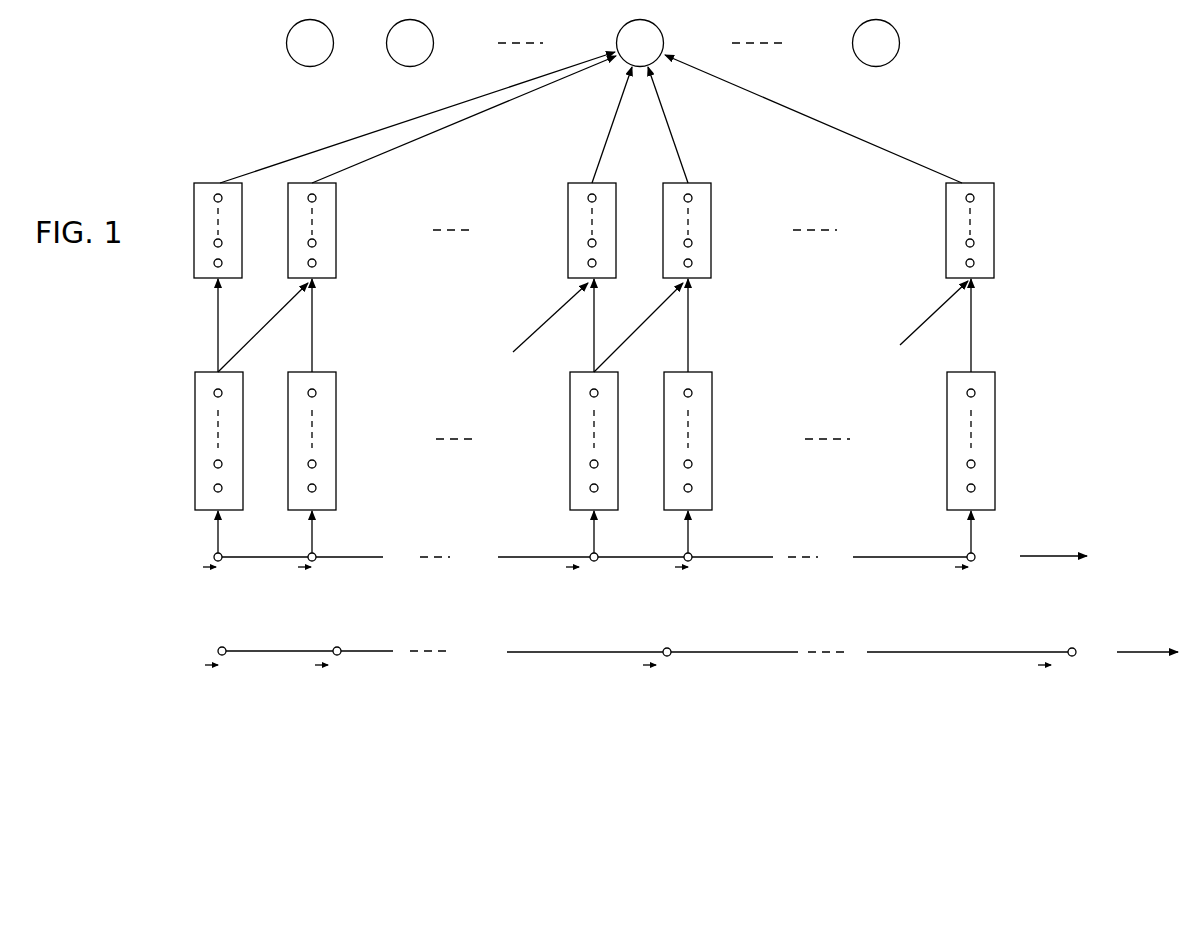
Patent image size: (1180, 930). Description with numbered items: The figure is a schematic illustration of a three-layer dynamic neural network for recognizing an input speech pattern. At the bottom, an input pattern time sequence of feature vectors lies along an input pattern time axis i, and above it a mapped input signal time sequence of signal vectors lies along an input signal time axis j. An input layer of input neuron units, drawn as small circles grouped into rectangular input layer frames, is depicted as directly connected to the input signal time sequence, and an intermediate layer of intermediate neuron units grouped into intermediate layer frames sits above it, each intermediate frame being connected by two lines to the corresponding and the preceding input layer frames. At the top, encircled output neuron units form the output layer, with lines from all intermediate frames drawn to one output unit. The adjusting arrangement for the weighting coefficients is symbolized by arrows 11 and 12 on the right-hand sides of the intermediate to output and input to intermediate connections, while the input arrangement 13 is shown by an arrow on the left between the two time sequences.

The adjusting arrangement arrow 11 is at (1000, 112).
The adjusting arrangement arrow 12 is at (1000, 323).
The input arrangement 13 is at (195, 605).